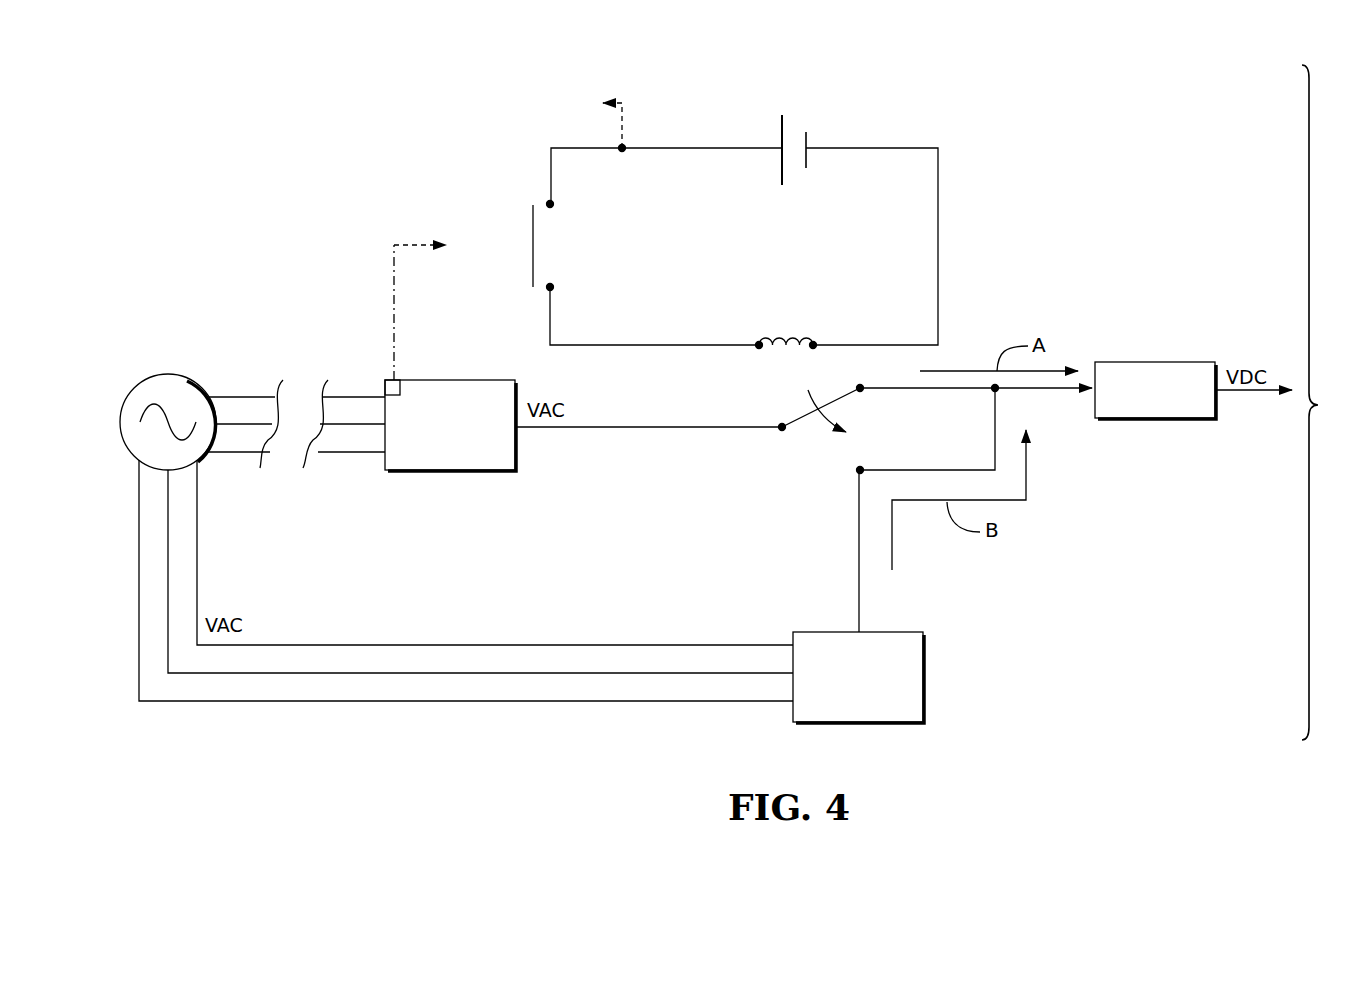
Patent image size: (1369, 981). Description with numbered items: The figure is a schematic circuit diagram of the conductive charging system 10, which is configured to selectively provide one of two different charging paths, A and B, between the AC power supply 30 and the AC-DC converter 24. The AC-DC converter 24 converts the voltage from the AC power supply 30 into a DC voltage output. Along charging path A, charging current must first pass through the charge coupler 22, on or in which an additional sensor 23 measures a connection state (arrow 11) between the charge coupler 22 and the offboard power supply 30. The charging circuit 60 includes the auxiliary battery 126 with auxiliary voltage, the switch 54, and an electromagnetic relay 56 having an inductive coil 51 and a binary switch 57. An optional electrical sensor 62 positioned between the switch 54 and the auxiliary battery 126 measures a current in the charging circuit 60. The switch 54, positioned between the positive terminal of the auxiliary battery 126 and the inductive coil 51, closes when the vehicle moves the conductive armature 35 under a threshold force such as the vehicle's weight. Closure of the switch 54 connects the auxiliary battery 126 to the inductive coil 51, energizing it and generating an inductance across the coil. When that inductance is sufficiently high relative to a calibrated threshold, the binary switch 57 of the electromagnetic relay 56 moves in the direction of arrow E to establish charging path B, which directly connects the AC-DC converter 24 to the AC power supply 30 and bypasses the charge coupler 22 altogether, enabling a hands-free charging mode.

The conductive charging system 10 is at (1324, 402).
The connection state 11 is at (394, 327).
The charge coupler 22 is at (450, 425).
The sensor 23 is at (400, 387).
The AC-DC converter 24 is at (1155, 362).
The AC power supply 30 is at (171, 376).
The conductive armature 35 is at (858, 596).
The inductive coil 51 is at (805, 342).
The switch 54 is at (572, 245).
The electromagnetic relay 56 is at (777, 444).
The binary switch 57 is at (806, 414).
The charging circuit 60 is at (972, 207).
The electrical sensor 62 is at (623, 152).
The auxiliary battery 126 is at (806, 124).